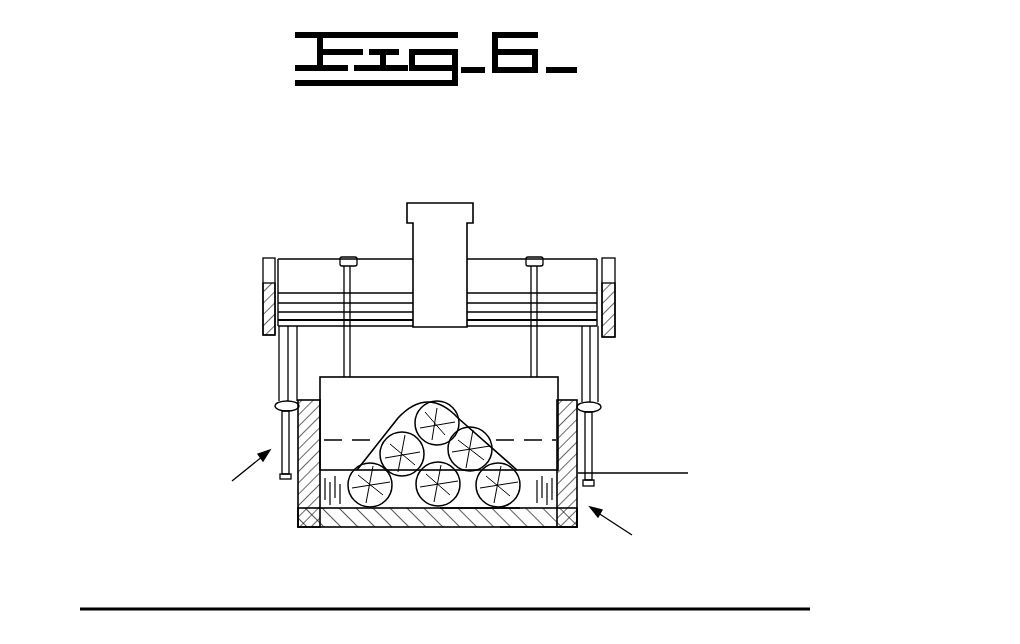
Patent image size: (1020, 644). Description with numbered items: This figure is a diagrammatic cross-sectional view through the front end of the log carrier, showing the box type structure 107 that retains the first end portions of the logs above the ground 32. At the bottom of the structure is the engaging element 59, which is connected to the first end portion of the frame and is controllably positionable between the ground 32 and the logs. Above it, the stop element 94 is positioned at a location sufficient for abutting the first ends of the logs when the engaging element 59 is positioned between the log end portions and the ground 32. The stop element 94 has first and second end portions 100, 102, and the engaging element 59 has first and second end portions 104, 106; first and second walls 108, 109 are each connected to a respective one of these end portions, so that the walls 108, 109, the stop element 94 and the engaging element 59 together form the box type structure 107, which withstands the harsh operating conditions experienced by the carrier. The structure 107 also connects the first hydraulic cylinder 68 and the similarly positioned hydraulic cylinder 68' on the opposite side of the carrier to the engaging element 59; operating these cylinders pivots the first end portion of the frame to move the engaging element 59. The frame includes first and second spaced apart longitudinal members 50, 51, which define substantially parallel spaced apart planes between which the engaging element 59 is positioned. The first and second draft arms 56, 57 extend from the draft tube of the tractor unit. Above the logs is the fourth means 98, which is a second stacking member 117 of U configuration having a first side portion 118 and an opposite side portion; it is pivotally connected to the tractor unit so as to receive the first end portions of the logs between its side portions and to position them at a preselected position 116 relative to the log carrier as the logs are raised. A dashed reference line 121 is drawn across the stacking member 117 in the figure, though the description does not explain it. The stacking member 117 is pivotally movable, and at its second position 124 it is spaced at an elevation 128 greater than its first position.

The ground 32 is at (707, 621).
The first longitudinal member 50 is at (298, 412).
The second longitudinal member 51 is at (598, 407).
The first draft arm 56 is at (268, 270).
The second draft arm 57 is at (608, 268).
The engaging element 59 is at (488, 530).
The first double acting hydraulic cylinder 68 is at (255, 358).
The hydraulic cylinder 68' is at (630, 364).
The stop element 94 is at (366, 520).
The fourth means 98 is at (510, 317).
The first end portion of the stop element 100 is at (298, 515).
The second end portion of the stop element 102 is at (570, 530).
The first end portion of the engaging element 104 is at (347, 536).
The second end portion of the engaging element 106 is at (550, 533).
The box type structure 107 is at (223, 475).
The first wall 108 is at (312, 466).
The second wall 109 is at (578, 458).
The preselected position 116 is at (448, 532).
The second stacking member 117 is at (530, 424).
The first side portion 118 is at (371, 317).
The liquid level 121 is at (548, 443).
The second position 124 is at (639, 532).
The elevation 128 is at (688, 473).